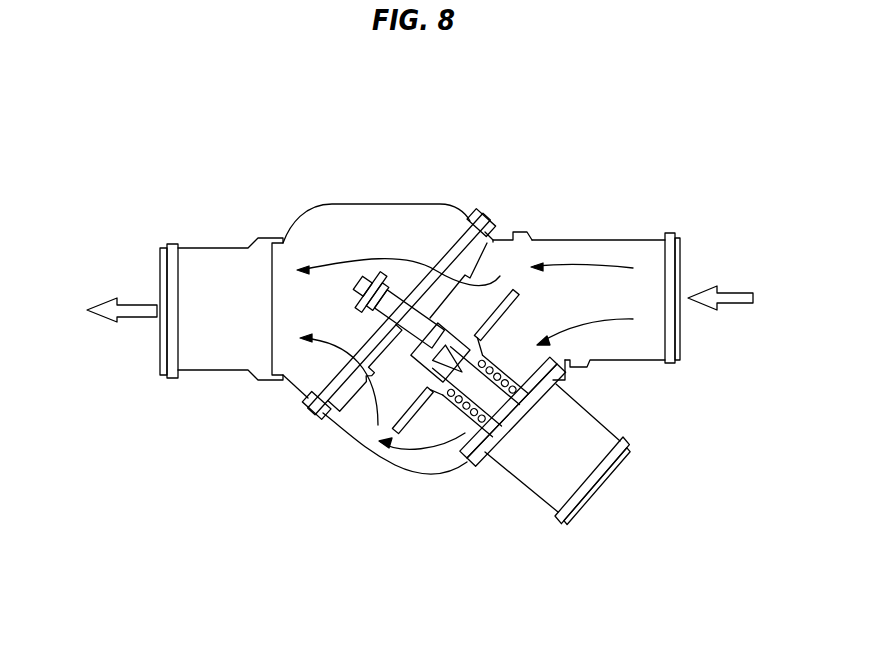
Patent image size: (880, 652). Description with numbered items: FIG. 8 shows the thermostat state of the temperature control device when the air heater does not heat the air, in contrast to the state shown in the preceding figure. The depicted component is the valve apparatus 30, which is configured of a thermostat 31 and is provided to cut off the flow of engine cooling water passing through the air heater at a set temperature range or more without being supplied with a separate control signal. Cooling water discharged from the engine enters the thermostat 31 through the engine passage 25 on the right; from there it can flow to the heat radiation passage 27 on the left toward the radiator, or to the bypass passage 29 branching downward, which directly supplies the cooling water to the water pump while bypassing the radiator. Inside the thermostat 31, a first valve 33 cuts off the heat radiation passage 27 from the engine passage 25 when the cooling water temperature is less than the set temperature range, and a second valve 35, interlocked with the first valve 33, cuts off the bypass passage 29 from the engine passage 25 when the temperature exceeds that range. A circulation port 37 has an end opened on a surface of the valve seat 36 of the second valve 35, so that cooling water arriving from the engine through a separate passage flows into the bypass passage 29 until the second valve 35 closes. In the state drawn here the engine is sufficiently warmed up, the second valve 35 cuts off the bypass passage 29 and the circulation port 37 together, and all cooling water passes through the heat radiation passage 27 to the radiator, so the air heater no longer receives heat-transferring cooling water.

The engine passage 25 is at (632, 240).
The heat radiation passage 27 is at (199, 248).
The bypass passage 29 is at (594, 420).
The valve apparatus 30 is at (415, 115).
The thermostat 31 is at (307, 196).
The first valve 33 is at (512, 292).
The second valve 35 is at (559, 358).
The valve seat 36 is at (486, 457).
The circulation port 37 is at (480, 460).